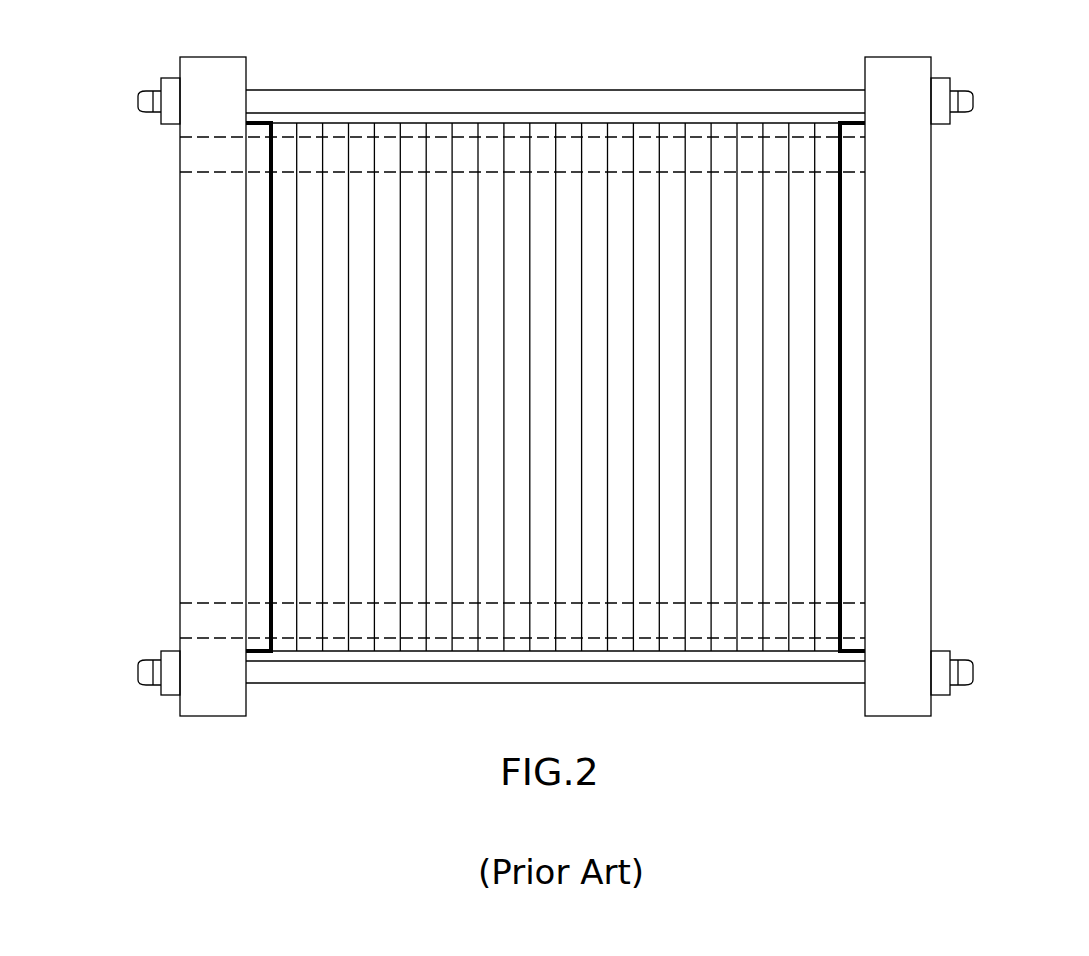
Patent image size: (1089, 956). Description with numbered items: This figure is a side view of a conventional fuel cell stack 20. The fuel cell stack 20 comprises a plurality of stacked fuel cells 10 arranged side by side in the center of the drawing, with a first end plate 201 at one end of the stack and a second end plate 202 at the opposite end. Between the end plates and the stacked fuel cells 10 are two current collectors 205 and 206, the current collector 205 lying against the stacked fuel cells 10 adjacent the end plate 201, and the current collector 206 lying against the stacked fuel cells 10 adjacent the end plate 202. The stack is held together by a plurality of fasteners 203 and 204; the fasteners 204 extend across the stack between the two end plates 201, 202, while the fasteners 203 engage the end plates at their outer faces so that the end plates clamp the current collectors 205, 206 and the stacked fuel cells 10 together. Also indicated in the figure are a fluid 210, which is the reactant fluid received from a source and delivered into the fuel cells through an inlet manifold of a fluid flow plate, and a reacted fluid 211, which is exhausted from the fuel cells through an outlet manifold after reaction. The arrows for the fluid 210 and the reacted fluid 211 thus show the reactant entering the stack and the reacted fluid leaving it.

The fuel cell stack 20 is at (92, 118).
The fuel cells 10 is at (672, 124).
The end plate 201 is at (931, 520).
The end plate 202 is at (180, 520).
The fasteners 203 is at (954, 88).
The fasteners 204 is at (345, 90).
The current collector 205 is at (850, 387).
The current collector 206 is at (260, 387).
The fluid 210 is at (845, 153).
The reacted fluid 211 is at (268, 620).